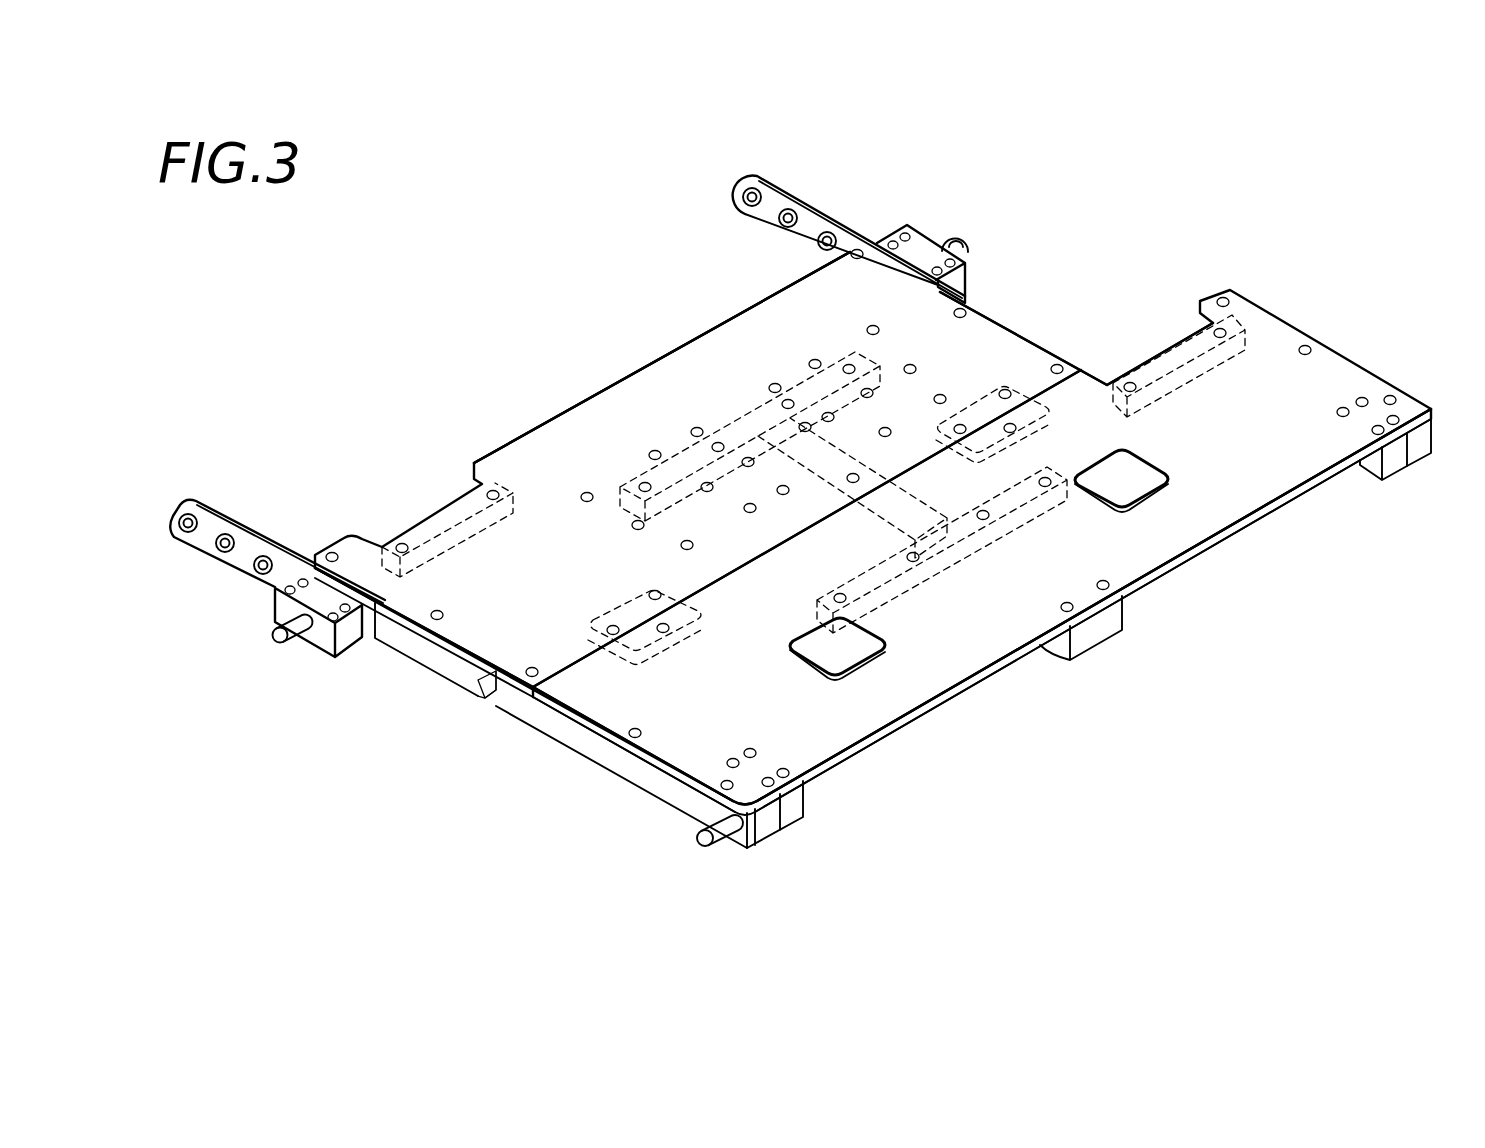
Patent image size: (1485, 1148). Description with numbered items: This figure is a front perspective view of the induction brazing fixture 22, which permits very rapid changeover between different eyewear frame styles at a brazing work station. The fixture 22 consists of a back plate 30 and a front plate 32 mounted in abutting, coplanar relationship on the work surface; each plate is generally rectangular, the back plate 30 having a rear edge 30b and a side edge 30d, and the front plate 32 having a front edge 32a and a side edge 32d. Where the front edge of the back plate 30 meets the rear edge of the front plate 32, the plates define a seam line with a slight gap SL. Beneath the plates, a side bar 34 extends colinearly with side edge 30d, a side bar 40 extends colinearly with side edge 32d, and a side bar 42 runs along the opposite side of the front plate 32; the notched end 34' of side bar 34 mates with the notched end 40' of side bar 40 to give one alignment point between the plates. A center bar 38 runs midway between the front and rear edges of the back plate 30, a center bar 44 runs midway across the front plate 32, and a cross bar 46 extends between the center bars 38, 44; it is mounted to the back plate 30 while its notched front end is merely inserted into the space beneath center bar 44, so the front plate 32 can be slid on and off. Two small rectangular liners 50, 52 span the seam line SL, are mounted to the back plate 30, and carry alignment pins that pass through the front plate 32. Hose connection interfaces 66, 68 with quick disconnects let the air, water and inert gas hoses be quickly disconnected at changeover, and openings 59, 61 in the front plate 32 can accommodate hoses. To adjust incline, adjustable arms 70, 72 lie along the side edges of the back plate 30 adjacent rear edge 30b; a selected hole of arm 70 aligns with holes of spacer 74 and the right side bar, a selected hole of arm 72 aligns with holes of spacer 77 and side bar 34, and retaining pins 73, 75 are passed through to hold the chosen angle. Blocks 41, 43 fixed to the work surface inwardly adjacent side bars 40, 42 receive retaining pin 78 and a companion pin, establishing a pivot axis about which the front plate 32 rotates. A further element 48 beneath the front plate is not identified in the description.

The induction brazing fixture 22 is at (572, 328).
The back plate 30 is at (683, 368).
The rear edge of back plate 30b is at (560, 425).
The side edge of back plate 30d is at (453, 652).
The front plate 32 is at (1175, 536).
The front edge of front plate 32a is at (975, 683).
The side edge of front plate 32d is at (660, 770).
The side bar 34 is at (398, 685).
The side bar 40 is at (621, 790).
The notched end of side bar 34 34' is at (466, 755).
The notched end of side bar 40 40' is at (494, 738).
The center bar 38 is at (800, 400).
The block 41 is at (808, 797).
The side bar 42 is at (1423, 440).
The block 43 is at (1397, 468).
The center bar 44 is at (985, 548).
The cross bar 46 is at (898, 460).
The support foot 48 is at (1100, 636).
The liner 50 is at (620, 610).
The liner 52 is at (975, 412).
The opening 59 is at (800, 636).
The opening 61 is at (1150, 478).
The hose connection interface 66 is at (1183, 355).
The hose connection interface 68 is at (445, 520).
The adjustable arm 70 is at (791, 196).
The adjustable arm 72 is at (262, 528).
The retaining pin 73 is at (957, 237).
The spacer 74 is at (882, 238).
The retaining pin 75 is at (272, 636).
The spacer 77 is at (345, 643).
The retaining pin 78 is at (708, 852).
The seam line SL is at (688, 578).